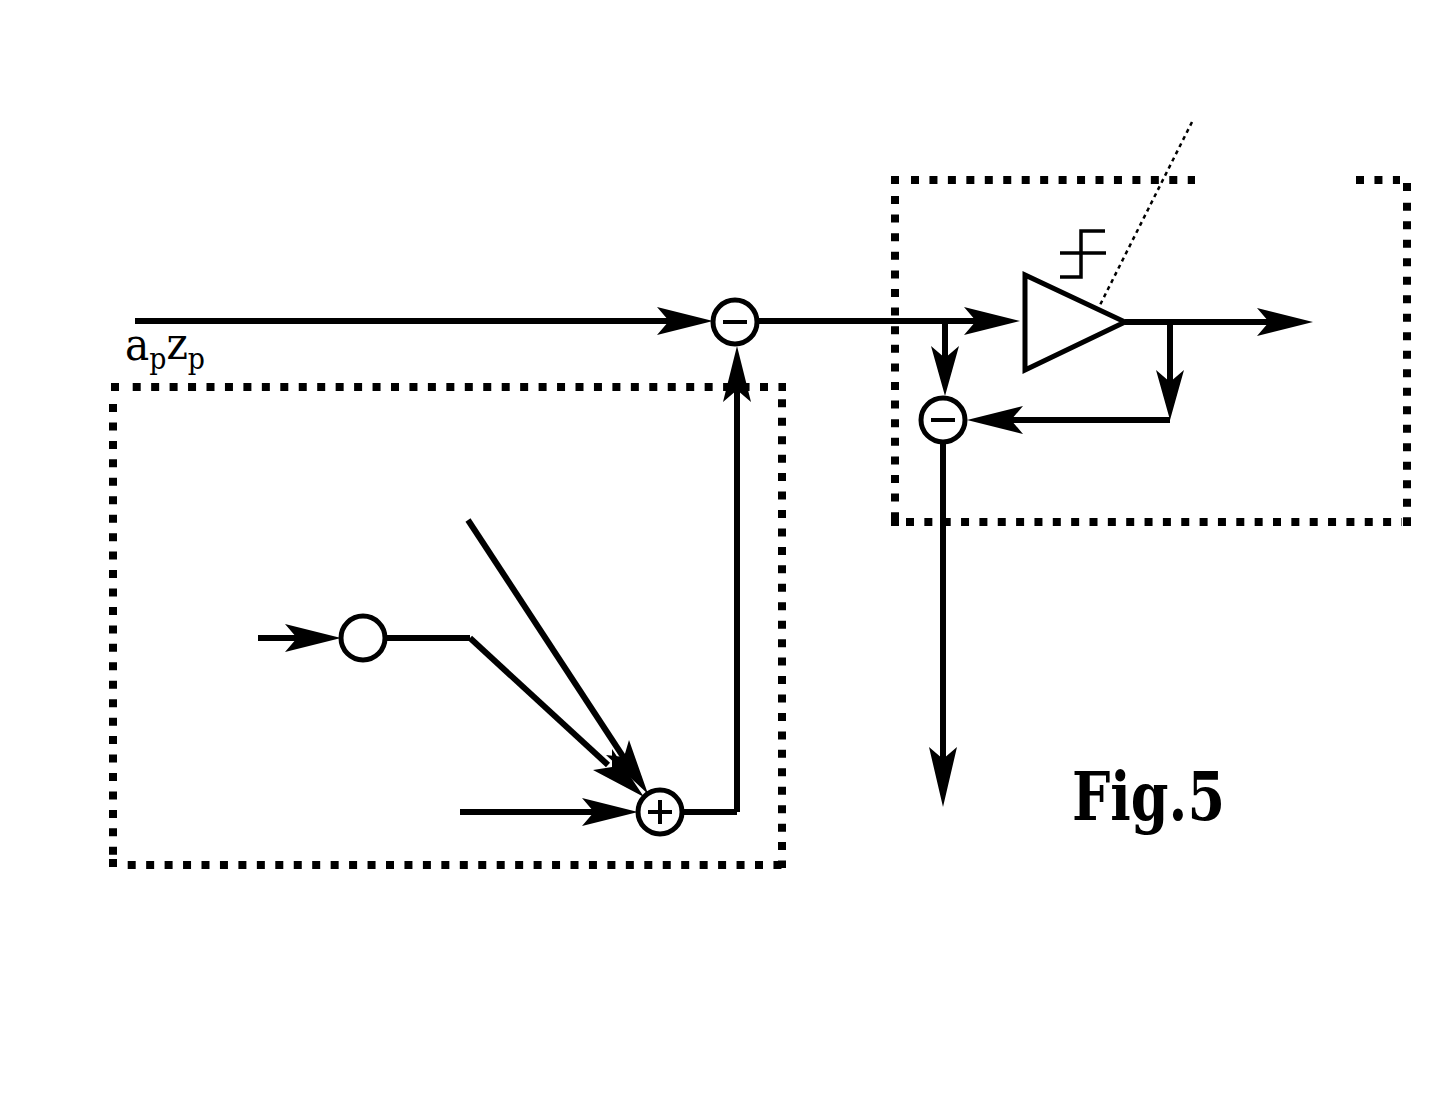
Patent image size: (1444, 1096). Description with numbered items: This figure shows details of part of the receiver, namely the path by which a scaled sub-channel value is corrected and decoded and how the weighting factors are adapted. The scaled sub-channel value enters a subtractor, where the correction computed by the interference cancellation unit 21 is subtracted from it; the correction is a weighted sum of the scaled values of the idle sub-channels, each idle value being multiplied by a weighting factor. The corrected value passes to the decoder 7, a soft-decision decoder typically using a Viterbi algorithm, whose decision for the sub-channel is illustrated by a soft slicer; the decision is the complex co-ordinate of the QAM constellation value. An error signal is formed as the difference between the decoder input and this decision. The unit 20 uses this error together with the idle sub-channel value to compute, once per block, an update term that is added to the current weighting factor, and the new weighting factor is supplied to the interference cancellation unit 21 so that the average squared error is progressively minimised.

The unit 20 is at (338, 405).
The decoder 7 is at (990, 178).
The interference cancellation unit 21 is at (451, 319).